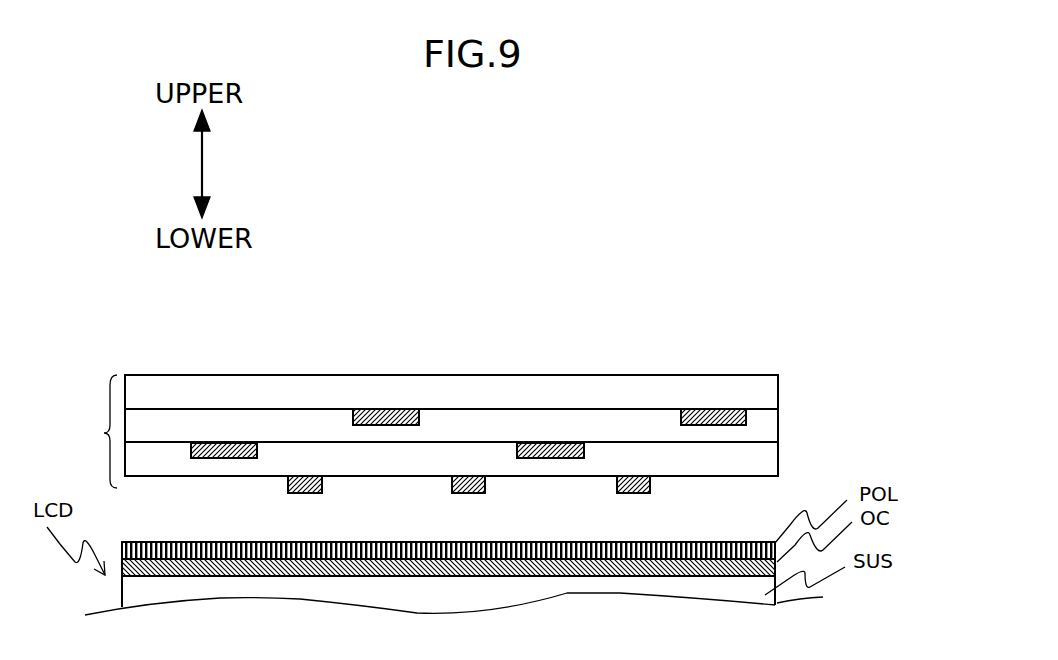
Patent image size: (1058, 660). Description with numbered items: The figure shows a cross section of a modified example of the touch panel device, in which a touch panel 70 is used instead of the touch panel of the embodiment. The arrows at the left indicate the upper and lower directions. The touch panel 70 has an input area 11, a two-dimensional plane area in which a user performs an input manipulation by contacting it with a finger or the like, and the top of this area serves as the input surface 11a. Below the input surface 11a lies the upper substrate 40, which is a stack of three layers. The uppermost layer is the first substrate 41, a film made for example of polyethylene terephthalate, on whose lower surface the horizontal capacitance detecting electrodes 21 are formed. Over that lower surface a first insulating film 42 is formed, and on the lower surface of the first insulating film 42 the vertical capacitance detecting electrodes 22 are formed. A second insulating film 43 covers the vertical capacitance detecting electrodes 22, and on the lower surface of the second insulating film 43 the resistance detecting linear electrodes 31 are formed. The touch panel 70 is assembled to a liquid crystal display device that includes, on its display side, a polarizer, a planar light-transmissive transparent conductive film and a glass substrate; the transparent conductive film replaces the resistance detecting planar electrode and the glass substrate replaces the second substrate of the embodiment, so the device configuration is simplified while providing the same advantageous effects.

The touch panel 70 is at (458, 287).
The input area 11 is at (635, 362).
The input surface 11a is at (695, 373).
The upper substrate 40 is at (427, 431).
The first substrate 41 is at (763, 395).
The first insulating film 42 is at (768, 433).
The second insulating film 43 is at (768, 463).
The horizontal capacitance detecting electrodes 21 is at (673, 409).
The vertical capacitance detecting electrodes 22 is at (210, 442).
The resistance detecting linear electrodes 31 is at (457, 475).